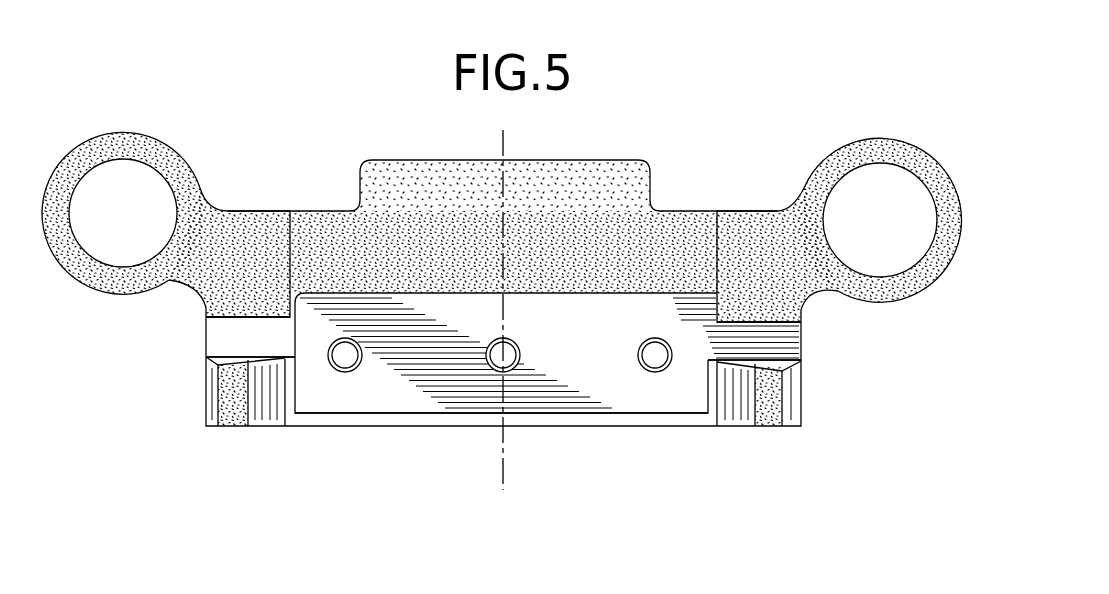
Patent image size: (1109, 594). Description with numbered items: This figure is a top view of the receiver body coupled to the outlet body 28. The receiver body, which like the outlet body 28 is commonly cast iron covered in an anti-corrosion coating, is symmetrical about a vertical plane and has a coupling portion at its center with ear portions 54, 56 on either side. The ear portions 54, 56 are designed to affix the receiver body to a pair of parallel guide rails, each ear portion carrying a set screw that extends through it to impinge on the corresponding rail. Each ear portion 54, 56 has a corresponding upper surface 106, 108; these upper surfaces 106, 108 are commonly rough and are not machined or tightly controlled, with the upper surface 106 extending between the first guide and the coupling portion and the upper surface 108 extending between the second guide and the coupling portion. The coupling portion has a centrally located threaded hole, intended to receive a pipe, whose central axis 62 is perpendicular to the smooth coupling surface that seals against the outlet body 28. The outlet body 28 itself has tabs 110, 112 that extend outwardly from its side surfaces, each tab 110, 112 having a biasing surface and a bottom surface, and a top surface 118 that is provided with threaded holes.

The outlet body 28 is at (360, 432).
The ear portion 54 is at (143, 307).
The ear portion 56 is at (905, 92).
The central axis 62 is at (502, 443).
The upper surface 106 is at (244, 243).
The upper surface 108 is at (777, 233).
The tab 110 is at (233, 333).
The tab 112 is at (789, 332).
The top surface 118 is at (633, 393).